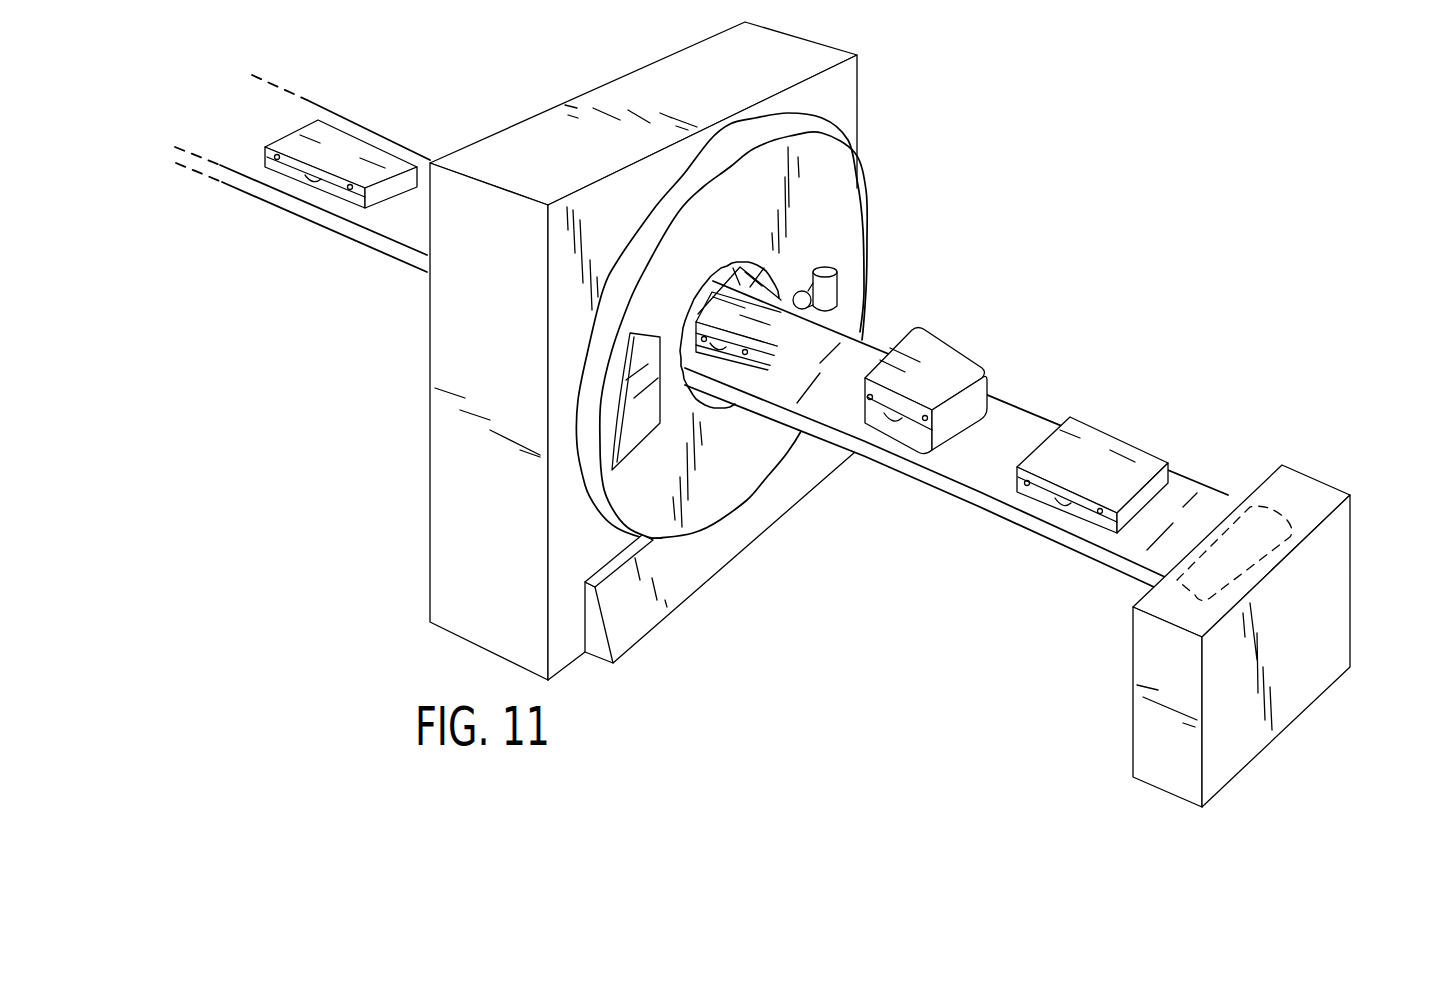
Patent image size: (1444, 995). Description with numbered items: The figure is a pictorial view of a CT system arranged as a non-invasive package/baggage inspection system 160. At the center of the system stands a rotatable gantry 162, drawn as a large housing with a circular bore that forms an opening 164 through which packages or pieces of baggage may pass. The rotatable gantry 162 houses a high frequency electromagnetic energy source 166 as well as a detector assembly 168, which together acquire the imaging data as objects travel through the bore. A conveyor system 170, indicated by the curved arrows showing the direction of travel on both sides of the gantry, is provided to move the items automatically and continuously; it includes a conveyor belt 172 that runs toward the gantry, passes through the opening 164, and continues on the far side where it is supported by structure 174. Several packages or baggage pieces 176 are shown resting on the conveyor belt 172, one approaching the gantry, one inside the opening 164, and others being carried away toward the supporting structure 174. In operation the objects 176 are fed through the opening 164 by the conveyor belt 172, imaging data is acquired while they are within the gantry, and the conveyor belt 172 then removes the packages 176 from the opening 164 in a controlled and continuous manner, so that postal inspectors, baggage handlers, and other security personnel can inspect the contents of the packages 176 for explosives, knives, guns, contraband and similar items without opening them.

The package/baggage inspection system 160 is at (1130, 215).
The rotatable gantry 162 is at (850, 199).
The opening 164 is at (757, 273).
The high frequency electromagnetic energy source 166 is at (838, 287).
The detector assembly 168 is at (636, 437).
The conveyor system 170 is at (170, 193).
The conveyor belt 172 is at (382, 225).
The structure 174 is at (1343, 598).
The packages or baggage pieces 176 is at (357, 148).